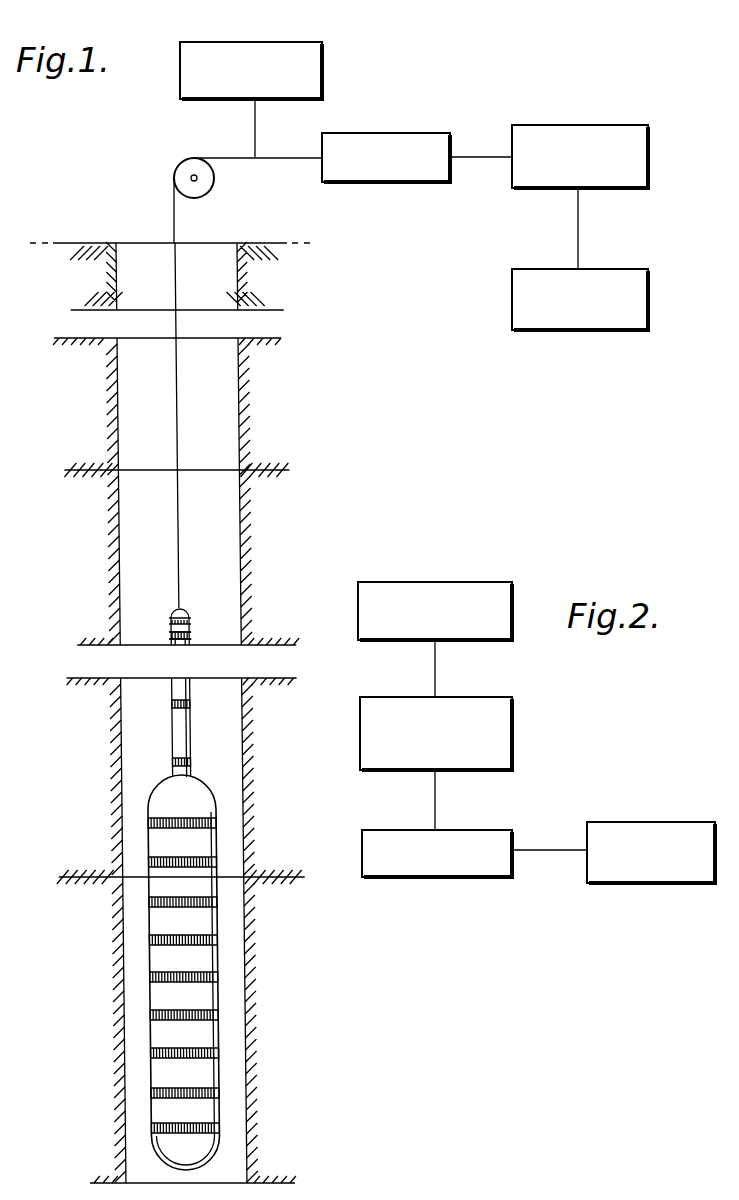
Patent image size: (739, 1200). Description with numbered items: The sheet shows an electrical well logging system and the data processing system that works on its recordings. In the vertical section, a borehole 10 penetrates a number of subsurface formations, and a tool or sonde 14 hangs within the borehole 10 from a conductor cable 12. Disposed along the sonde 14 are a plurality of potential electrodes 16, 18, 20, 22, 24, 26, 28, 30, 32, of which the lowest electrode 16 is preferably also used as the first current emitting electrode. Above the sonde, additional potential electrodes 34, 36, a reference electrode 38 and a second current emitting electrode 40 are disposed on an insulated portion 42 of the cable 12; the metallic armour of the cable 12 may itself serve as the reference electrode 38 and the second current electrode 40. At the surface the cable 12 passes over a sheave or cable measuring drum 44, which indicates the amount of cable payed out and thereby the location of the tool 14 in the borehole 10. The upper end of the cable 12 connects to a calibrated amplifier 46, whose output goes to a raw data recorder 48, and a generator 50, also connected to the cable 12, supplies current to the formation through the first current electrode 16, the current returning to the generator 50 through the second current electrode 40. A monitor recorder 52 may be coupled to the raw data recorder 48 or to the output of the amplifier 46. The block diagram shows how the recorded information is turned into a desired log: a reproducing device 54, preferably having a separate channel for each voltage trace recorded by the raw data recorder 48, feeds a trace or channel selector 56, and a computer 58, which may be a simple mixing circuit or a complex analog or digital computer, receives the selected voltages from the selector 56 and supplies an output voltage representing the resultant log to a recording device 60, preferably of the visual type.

In FIG. 1, the borehole 10 is at (237, 342).
In FIG. 1, the conductor cable 12 is at (176, 437).
In FIG. 1, the tool or sonde 14 is at (201, 789).
In FIG. 1, the potential electrode 16 is at (180, 1118).
In FIG. 1, the potential electrode 18 is at (178, 1088).
In FIG. 1, the potential electrode 20 is at (180, 1042).
In FIG. 1, the potential electrode 22 is at (180, 1004).
In FIG. 1, the potential electrode 24 is at (182, 968).
In FIG. 1, the potential electrode 26 is at (182, 930).
In FIG. 1, the potential electrode 28 is at (182, 891).
In FIG. 1, the potential electrode 30 is at (182, 851).
In FIG. 1, the potential electrode 32 is at (179, 818).
In FIG. 1, the additional potential electrode 34 is at (167, 764).
In FIG. 1, the additional potential electrode 36 is at (167, 704).
In FIG. 1, the reference electrode 38 is at (187, 636).
In FIG. 1, the second current emitting electrode 40 is at (187, 619).
In FIG. 1, the insulated portion of cable 42 is at (186, 724).
In FIG. 1, the sheave or cable measuring drum 44 is at (214, 178).
In FIG. 1, the calibrated amplifier 46 is at (381, 133).
In FIG. 1, the raw data recorder 48 is at (572, 117).
In FIG. 1, the generator 50 is at (246, 42).
In FIG. 1, the monitor recorder 52 is at (605, 269).
In FIG. 2, the reproducing device 54 is at (452, 572).
In FIG. 2, the trace or channel selector 56 is at (478, 689).
In FIG. 2, the computer 58 is at (474, 820).
In FIG. 2, the recording device 60 is at (655, 812).